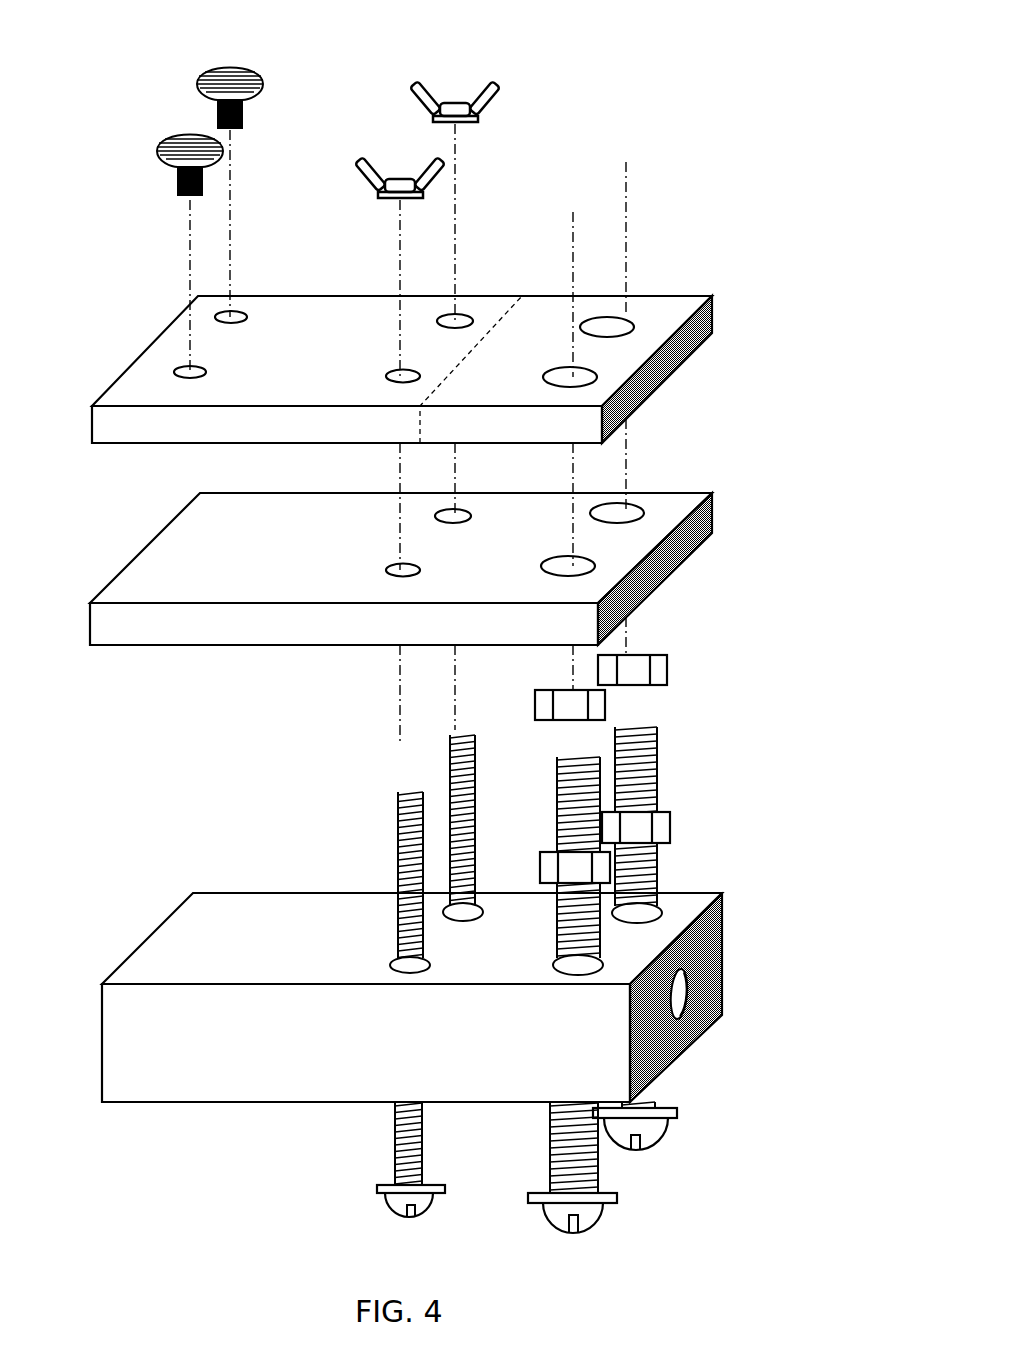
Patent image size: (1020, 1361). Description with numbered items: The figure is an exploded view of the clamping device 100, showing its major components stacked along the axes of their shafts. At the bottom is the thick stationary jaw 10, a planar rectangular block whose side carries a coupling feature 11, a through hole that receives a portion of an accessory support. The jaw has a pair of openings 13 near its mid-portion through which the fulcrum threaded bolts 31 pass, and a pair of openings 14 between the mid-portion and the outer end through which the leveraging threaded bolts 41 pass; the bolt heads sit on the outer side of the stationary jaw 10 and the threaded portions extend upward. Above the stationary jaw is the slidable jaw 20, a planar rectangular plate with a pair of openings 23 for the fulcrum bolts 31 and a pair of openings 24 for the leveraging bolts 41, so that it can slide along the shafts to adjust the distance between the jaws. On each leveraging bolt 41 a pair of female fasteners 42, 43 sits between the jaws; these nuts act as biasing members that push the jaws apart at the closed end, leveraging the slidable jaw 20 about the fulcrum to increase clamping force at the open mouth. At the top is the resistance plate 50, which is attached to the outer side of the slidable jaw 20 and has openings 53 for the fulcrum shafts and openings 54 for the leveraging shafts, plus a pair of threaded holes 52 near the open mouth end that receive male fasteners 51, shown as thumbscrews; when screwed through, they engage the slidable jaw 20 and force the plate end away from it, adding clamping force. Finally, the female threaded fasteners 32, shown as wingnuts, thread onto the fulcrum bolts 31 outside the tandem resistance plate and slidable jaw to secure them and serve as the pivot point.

The clamping device 100 is at (683, 70).
The stationary jaw 10 is at (138, 960).
The coupling feature 11 is at (690, 987).
The openings 13 is at (477, 902).
The openings 14 is at (655, 908).
The slidable jaw 20 is at (125, 587).
The openings 23 is at (467, 517).
The openings 24 is at (640, 513).
The threaded bolts 31 is at (403, 878).
The female threaded fastener 32 is at (498, 90).
The threaded bolts 41 is at (655, 775).
The female fastener 42 is at (672, 830).
The female fastener 43 is at (663, 672).
The resistance plate 50 is at (137, 378).
The male fasteners 51 is at (212, 63).
The threaded holes 52 is at (240, 315).
The openings 53 is at (463, 318).
The openings 54 is at (635, 318).